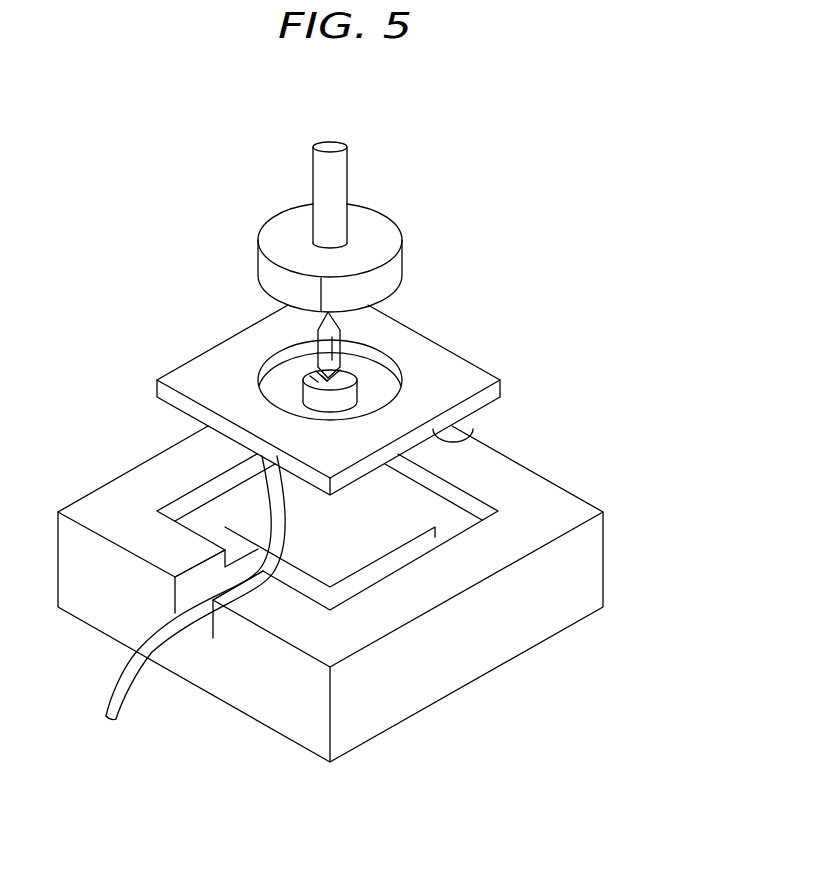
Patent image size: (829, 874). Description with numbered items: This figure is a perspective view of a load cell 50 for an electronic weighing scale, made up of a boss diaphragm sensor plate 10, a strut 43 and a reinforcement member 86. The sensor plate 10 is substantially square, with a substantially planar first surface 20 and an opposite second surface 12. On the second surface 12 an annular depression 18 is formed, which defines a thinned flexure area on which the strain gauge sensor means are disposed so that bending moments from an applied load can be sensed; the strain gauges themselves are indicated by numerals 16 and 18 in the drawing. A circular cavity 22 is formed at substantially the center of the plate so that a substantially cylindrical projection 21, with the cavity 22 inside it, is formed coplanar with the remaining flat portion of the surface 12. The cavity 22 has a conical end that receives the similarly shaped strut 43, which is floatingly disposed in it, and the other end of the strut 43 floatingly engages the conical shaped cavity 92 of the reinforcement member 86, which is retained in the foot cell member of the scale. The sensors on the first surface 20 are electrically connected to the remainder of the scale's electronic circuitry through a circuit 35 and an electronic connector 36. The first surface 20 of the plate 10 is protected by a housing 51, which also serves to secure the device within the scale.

The bossed sensor plate 10 is at (477, 362).
The second surface 12 is at (450, 392).
The sample 16 is at (278, 384).
The annular depression 18 is at (324, 378).
The first planar surface 20 is at (470, 438).
The cylindrical projection 21 is at (262, 386).
The circular cavity 22 is at (277, 387).
The circuit 35 is at (282, 475).
The electronic connector 36 is at (121, 695).
The strut 43 is at (343, 347).
The load cell 50 is at (575, 210).
The housing 51 is at (603, 550).
The reinforcement member 86 is at (378, 211).
The conical shaped cavity 92 is at (343, 305).